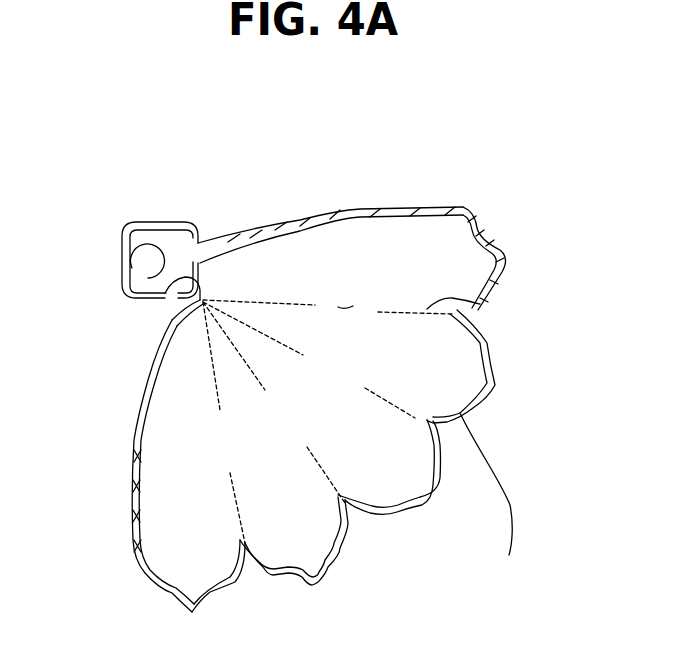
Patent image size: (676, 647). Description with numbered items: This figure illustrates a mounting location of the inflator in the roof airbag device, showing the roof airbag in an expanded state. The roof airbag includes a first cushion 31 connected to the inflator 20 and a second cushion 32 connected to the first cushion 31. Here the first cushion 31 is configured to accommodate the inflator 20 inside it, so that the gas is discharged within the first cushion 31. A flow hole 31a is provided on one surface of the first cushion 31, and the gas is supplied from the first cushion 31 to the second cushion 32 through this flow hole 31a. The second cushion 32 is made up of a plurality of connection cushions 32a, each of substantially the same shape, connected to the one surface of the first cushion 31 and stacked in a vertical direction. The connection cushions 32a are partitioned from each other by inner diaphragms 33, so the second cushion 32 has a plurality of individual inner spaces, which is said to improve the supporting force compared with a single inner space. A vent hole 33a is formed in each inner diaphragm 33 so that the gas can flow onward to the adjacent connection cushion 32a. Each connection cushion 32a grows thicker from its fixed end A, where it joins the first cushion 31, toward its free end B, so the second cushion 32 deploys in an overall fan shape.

The inflator 20 is at (147, 260).
The first cushion 31 is at (152, 209).
The flow hole 31a is at (165, 303).
The second cushion 32 is at (421, 203).
The connection cushion 32a is at (343, 553).
The inner diaphragm 33 is at (455, 314).
The vent hole 33a is at (343, 300).
The fixed end A is at (207, 267).
The free end B is at (496, 386).